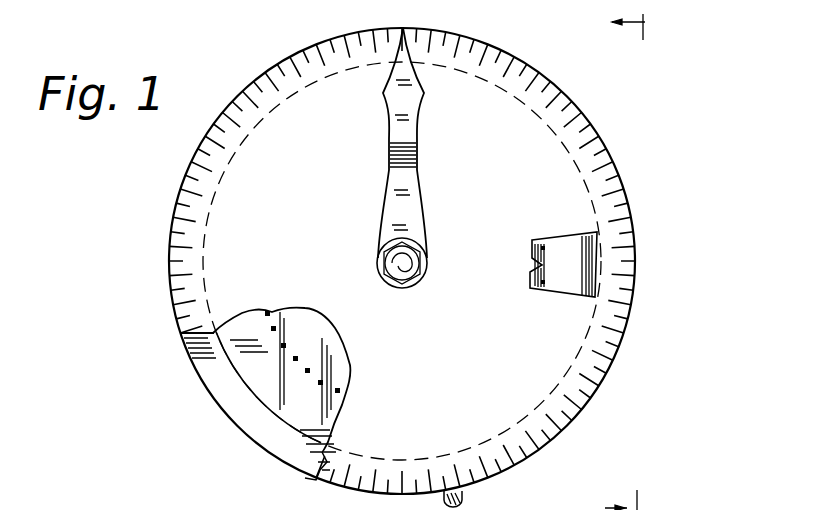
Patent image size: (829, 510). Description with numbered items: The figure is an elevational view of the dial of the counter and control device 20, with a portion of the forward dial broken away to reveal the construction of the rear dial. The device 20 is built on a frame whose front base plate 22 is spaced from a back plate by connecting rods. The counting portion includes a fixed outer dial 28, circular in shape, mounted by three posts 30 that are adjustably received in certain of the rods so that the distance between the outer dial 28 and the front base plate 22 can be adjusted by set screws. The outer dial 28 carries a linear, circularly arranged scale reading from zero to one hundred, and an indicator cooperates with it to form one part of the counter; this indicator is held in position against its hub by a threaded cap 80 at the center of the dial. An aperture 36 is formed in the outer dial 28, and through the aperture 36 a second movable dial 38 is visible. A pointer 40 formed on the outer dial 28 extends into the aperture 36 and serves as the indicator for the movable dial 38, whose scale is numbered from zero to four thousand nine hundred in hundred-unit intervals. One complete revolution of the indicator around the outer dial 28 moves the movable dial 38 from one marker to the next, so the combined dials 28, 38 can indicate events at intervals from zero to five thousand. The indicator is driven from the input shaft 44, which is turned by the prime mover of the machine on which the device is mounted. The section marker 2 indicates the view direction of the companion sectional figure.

The counter and control device 20 is at (180, 153).
The front base plate 22 is at (213, 380).
The fixed outer dial 28 is at (218, 252).
The posts 30 is at (403, 196).
The threaded cap 80 is at (406, 288).
The pointer 40 is at (540, 265).
The aperture 36 is at (590, 266).
The movable dial 38 is at (270, 400).
The shaft 44 is at (464, 491).
The section line 2- 2 is at (633, 262).